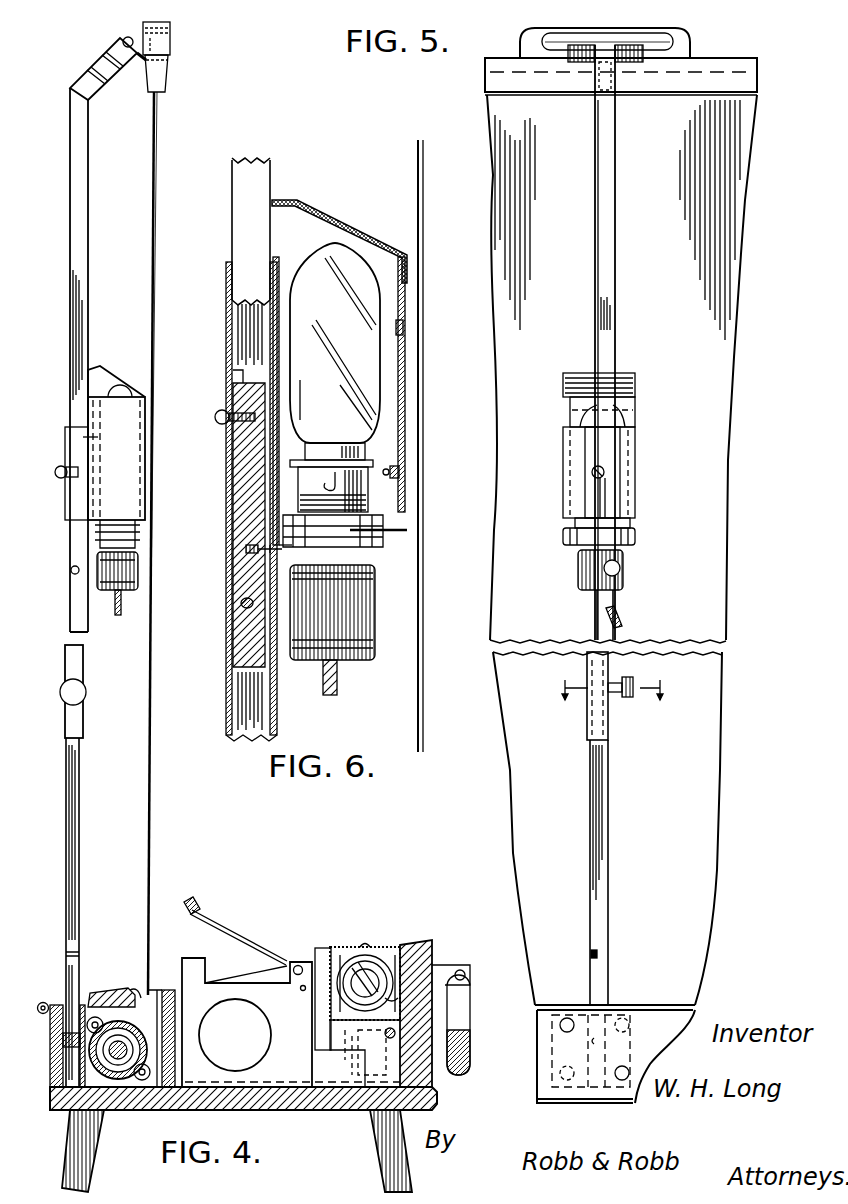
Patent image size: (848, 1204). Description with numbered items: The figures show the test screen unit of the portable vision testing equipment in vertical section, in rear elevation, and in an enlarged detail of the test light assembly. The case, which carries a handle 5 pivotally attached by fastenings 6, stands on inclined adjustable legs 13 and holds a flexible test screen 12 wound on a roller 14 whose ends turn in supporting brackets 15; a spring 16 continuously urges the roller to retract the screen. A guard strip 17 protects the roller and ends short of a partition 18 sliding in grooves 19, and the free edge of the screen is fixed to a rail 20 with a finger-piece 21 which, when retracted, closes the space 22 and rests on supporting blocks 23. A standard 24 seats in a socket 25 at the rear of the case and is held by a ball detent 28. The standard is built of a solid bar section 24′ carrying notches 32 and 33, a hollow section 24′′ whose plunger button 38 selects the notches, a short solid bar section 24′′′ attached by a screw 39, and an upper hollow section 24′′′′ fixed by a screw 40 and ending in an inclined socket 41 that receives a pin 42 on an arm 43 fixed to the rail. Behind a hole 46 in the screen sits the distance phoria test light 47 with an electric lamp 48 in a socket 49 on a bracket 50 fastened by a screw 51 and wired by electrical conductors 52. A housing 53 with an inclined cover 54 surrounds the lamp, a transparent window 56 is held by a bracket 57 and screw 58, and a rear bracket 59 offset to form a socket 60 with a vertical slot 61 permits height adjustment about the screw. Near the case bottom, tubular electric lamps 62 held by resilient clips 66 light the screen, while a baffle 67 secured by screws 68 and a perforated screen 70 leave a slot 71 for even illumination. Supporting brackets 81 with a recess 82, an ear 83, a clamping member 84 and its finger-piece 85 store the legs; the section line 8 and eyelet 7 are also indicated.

In FIG. 4, the handle 5 is at (471, 1036).
In FIG. 4, the fastenings 6 is at (446, 968).
In FIG. 4, the eyelet 7 is at (43, 1002).
In FIG. 5, the section line 8 is at (612, 691).
In FIG. 4, the test screen 12 is at (150, 824).
In FIG. 6, the test screen 12 is at (425, 543).
In FIG. 5, the test screen 12 is at (742, 152).
In FIG. 4, the adjustable legs 13 is at (70, 1160).
In FIG. 4, the roller 14 is at (118, 1080).
In FIG. 4, the supporting brackets 15 is at (100, 1022).
In FIG. 4, the spring 16 is at (130, 1048).
In FIG. 5, the spring 16 is at (540, 1062).
In FIG. 4, the guard strip 17 is at (92, 995).
In FIG. 4, the partition 18 is at (170, 990).
In FIG. 4, the grooves 19 is at (158, 990).
In FIG. 4, the rail 20 is at (170, 72).
In FIG. 5, the rail 20 is at (758, 88).
In FIG. 4, the finger-piece 21 is at (172, 40).
In FIG. 5, the finger-piece 21 is at (692, 46).
In FIG. 4, the space 22 is at (138, 998).
In FIG. 4, the supporting blocks 23 is at (150, 1022).
In FIG. 4, the standard 24 is at (89, 258).
In FIG. 5, the standard 24 is at (616, 277).
In FIG. 4, the solid bar section 24′ is at (74, 872).
In FIG. 5, the solid bar section 24′ is at (606, 859).
In FIG. 4, the hollow section 24′′ is at (66, 662).
In FIG. 6, the hollow section 24′′ is at (228, 720).
In FIG. 5, the hollow section 24′′ is at (596, 632).
In FIG. 6, the short solid bar section 24′′′ is at (245, 590).
In FIG. 4, the hollow section 24′′′′ is at (80, 302).
In FIG. 6, the hollow section 24′′′′ is at (240, 267).
In FIG. 5, the hollow section 24′′′′ is at (616, 242).
In FIG. 4, the socket 25 is at (55, 1076).
In FIG. 4, the ball detent 28 is at (68, 1040).
In FIG. 5, the notch 32 is at (600, 955).
In FIG. 5, the notch 33 is at (595, 696).
In FIG. 4, the button 38 is at (80, 692).
In FIG. 5, the button 38 is at (634, 687).
In FIG. 4, the screw 39 is at (70, 570).
In FIG. 6, the screw 39 is at (240, 606).
In FIG. 4, the screw 40 is at (60, 470).
In FIG. 6, the screw 40 is at (215, 417).
In FIG. 5, the screw 40 is at (606, 473).
In FIG. 4, the socket 41 is at (88, 72).
In FIG. 5, the socket 41 is at (614, 80).
In FIG. 4, the pin 42 is at (125, 40).
In FIG. 5, the pin 42 is at (598, 75).
In FIG. 4, the arm 43 is at (137, 62).
In FIG. 4, the hole 46 is at (157, 446).
In FIG. 6, the hole 46 is at (426, 346).
In FIG. 4, the distance phoria test light 47 is at (120, 386).
In FIG. 6, the distance phoria test light 47 is at (348, 243).
In FIG. 6, the electric lamp 48 is at (312, 262).
In FIG. 5, the electric lamp 48 is at (582, 418).
In FIG. 6, the socket 49 is at (360, 488).
In FIG. 6, the bracket 50 is at (406, 530).
In FIG. 6, the screw 51 is at (246, 549).
In FIG. 4, the electrical conductors 52 is at (118, 614).
In FIG. 6, the electrical conductors 52 is at (338, 666).
In FIG. 5, the electrical conductors 52 is at (622, 622).
In FIG. 4, the housing 53 is at (105, 498).
In FIG. 6, the housing 53 is at (405, 296).
In FIG. 5, the housing 53 is at (637, 413).
In FIG. 4, the cover 54 is at (101, 367).
In FIG. 6, the cover 54 is at (300, 200).
In FIG. 5, the cover 54 is at (637, 386).
In FIG. 6, the transparent window 56 is at (403, 329).
In FIG. 6, the bracket 57 is at (372, 440).
In FIG. 6, the screw 58 is at (405, 470).
In FIG. 5, the bracket 59 is at (624, 452).
In FIG. 4, the socket 60 is at (83, 437).
In FIG. 6, the socket 60 is at (232, 349).
In FIG. 5, the socket 60 is at (600, 440).
In FIG. 5, the slot 61 is at (604, 500).
In FIG. 4, the electric lamps 62 is at (390, 968).
In FIG. 4, the resilient clips 66 is at (395, 1002).
In FIG. 4, the baffle 67 is at (391, 950).
In FIG. 4, the screws 68 is at (369, 945).
In FIG. 4, the perforated screen 70 is at (320, 948).
In FIG. 4, the slot 71 is at (336, 947).
In FIG. 4, the supporting brackets 81 is at (292, 1082).
In FIG. 4, the recess 82 is at (247, 978).
In FIG. 4, the ear 83 is at (198, 956).
In FIG. 4, the clamping member 84 is at (235, 933).
In FIG. 4, the finger-piece 85 is at (196, 904).